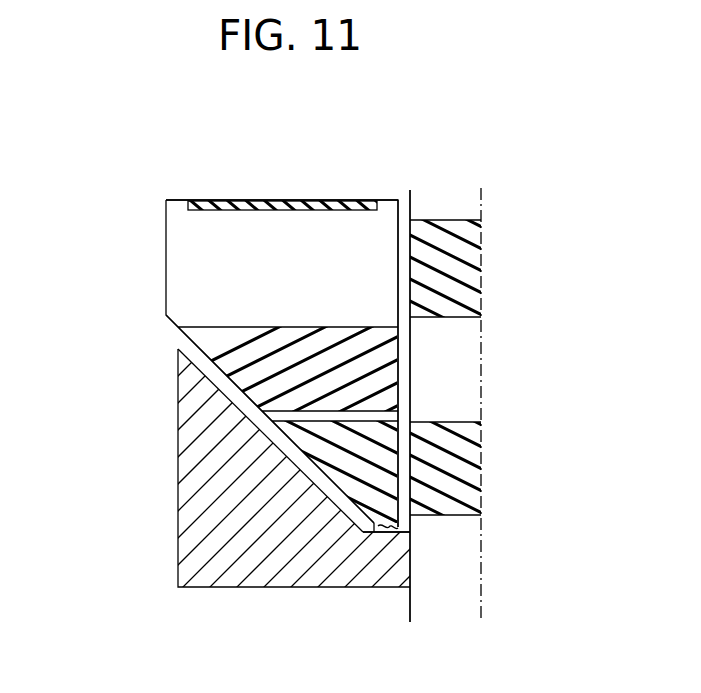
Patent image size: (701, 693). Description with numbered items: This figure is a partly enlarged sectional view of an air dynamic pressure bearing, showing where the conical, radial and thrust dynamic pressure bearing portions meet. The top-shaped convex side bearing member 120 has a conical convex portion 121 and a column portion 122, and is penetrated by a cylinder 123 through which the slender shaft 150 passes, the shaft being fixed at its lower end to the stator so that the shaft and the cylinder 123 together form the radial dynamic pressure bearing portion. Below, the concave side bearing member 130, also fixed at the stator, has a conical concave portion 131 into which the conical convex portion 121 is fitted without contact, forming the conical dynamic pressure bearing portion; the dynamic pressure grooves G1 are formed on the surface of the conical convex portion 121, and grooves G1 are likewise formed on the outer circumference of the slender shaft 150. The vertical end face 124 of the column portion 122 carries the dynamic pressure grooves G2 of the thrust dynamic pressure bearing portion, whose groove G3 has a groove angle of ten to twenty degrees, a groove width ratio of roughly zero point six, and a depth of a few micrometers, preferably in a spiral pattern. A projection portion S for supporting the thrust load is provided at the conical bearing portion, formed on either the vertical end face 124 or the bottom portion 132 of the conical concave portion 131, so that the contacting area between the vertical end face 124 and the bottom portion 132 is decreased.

The top-shaped convex side bearing member 120 is at (207, 275).
The conical convex portion 121 is at (300, 450).
The column portion 122 is at (193, 227).
The cylinder 123 is at (407, 212).
The vertical end face 124 is at (388, 534).
The concave side bearing member 130 is at (205, 438).
The conical concave portion 131 is at (320, 490).
The bottom portion 132 is at (410, 527).
The slender shaft 150 is at (445, 373).
The dynamic pressure grooves G1 is at (273, 355).
The dynamic pressure grooves G2 is at (435, 466).
The dynamic pressure groove G3 is at (248, 203).
The projection portion S is at (393, 534).